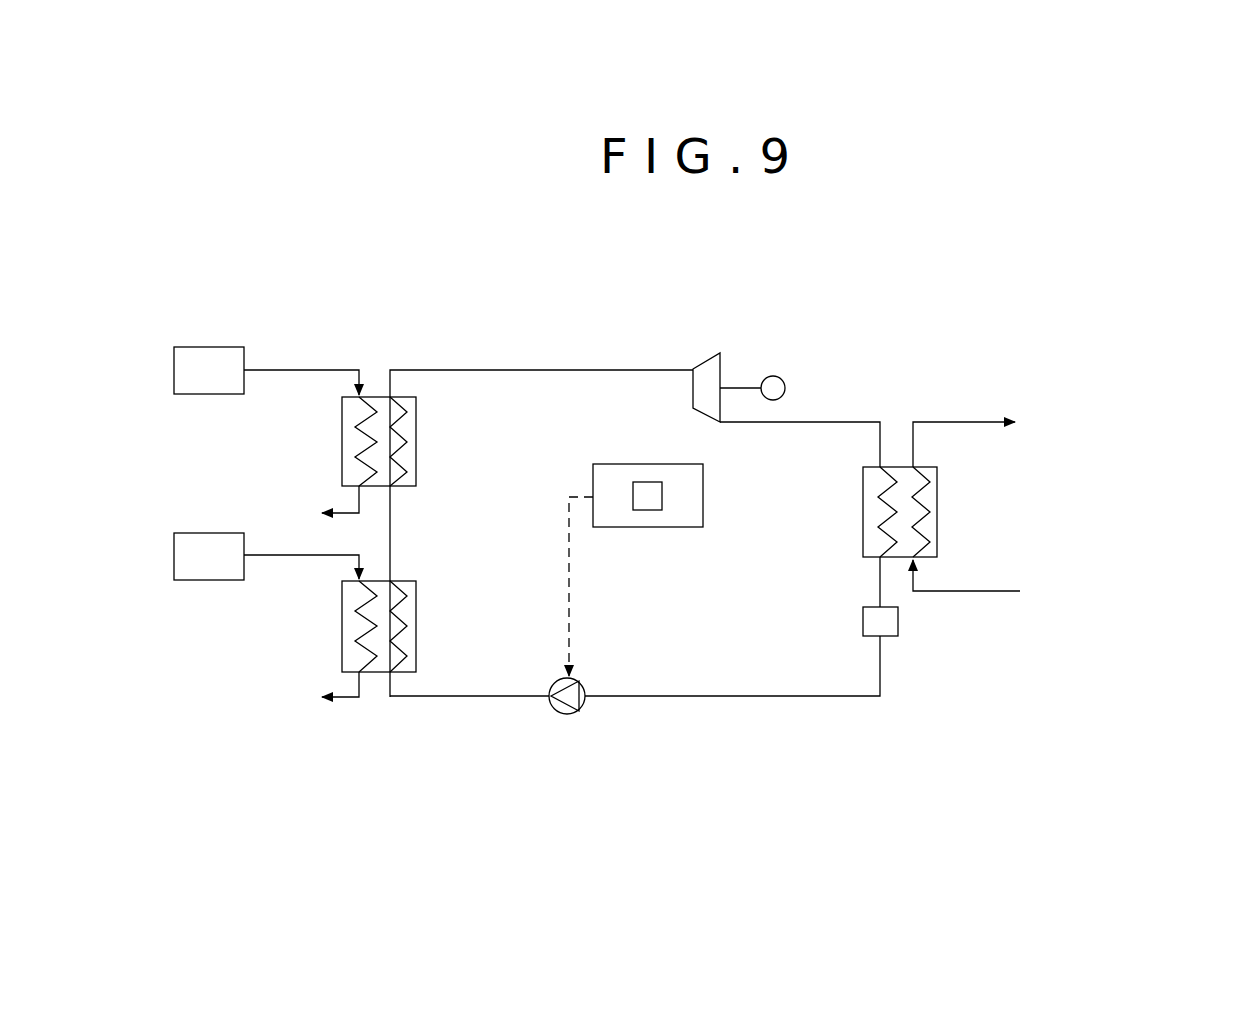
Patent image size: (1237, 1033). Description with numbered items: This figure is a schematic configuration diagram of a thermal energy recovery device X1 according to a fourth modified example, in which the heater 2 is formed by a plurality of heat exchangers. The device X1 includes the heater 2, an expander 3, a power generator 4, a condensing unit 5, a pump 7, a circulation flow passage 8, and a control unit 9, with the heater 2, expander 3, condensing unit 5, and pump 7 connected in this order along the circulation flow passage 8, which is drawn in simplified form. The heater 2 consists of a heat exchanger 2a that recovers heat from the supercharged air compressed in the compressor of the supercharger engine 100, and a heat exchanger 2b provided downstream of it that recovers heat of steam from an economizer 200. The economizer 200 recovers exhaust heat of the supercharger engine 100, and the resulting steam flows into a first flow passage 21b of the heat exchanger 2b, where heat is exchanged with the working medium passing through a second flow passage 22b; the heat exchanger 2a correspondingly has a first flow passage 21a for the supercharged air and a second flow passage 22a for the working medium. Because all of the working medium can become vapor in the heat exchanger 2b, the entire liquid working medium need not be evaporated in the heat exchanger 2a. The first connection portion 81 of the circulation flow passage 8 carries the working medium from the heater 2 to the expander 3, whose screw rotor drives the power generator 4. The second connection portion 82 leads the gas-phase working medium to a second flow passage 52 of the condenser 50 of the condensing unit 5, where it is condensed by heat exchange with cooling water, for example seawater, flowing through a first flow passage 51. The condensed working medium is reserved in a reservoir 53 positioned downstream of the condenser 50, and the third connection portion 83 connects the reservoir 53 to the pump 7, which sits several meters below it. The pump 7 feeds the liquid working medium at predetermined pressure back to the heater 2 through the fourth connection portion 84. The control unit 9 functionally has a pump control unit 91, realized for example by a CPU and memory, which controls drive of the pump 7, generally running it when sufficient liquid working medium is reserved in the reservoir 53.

The thermal energy recovery device X1 is at (748, 276).
The economizer 200 is at (211, 347).
The supercharger engine 100 is at (211, 533).
The heater 2 is at (378, 547).
The heat exchanger 2a is at (377, 639).
The heat exchanger 2b is at (378, 455).
The first evaporator heat source flow path 21a is at (360, 634).
The first flow passage 21b is at (360, 449).
The first evaporator working medium flow path 22a is at (404, 617).
The second flow passage 22b is at (404, 433).
The expander 3 is at (701, 369).
The power generator 4 is at (773, 376).
The condensing unit 5 is at (1010, 529).
The condenser 50 is at (1018, 514).
The first flow passage 51 is at (922, 504).
The second flow passage 52 is at (881, 519).
The reservoir 53 is at (863, 621).
The pump 7 is at (566, 714).
The circulation flow passage 8 is at (635, 519).
The first connection portion 81 is at (526, 370).
The second connection portion 82 is at (839, 422).
The third connection portion 83 is at (749, 697).
The fourth connection portion 84 is at (487, 697).
The control unit 9 is at (636, 543).
The pump control unit 91 is at (650, 510).